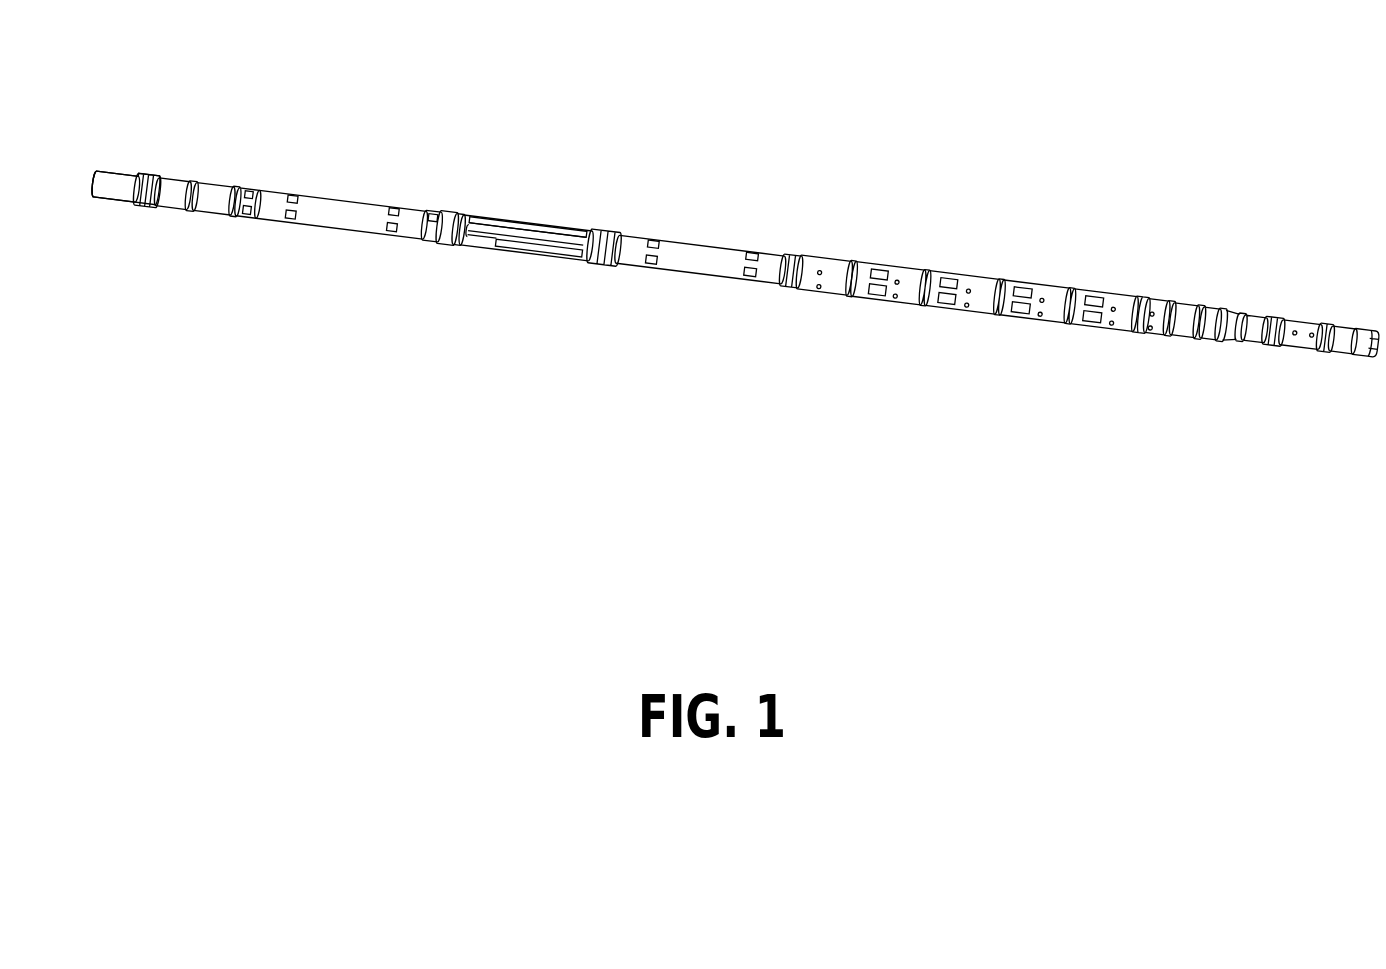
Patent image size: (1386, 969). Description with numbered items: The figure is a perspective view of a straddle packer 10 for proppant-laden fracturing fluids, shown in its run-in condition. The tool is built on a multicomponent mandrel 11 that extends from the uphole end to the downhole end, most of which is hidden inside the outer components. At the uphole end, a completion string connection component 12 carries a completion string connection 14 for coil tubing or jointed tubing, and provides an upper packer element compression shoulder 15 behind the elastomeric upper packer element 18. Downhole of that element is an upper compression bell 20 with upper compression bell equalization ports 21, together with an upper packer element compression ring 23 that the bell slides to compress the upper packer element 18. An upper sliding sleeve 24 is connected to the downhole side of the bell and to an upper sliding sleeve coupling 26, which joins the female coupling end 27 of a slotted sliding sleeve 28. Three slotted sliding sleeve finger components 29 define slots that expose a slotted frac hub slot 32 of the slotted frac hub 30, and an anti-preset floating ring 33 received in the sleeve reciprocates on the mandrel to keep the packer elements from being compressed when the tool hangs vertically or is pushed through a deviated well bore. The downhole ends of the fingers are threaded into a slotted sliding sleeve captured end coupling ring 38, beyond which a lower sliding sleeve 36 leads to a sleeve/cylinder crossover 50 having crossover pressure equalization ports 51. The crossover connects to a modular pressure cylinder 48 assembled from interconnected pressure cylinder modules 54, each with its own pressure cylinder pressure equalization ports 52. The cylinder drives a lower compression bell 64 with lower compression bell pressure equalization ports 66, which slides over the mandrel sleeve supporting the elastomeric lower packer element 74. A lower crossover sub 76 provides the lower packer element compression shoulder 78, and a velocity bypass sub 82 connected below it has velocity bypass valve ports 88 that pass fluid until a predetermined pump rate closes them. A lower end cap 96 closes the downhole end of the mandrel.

The straddle packer 10 is at (761, 109).
The multicomponent mandrel 11 is at (136, 153).
The completion string connection component 12 is at (110, 198).
The completion string connection 14 is at (93, 170).
The upper packer element compression shoulder 15 is at (158, 175).
The upper packer element 18 is at (182, 182).
The upper compression bell 20 is at (218, 193).
The upper compression bell equalization ports 21 is at (223, 205).
The upper packer element compression ring 23 is at (190, 203).
The upper sliding sleeve 24 is at (352, 205).
The upper sliding sleeve coupling 26 is at (435, 207).
The female coupling end 27 is at (445, 235).
The slotted sliding sleeve 28 is at (458, 248).
The slotted sliding sleeve finger components 29 is at (495, 233).
The slotted frac hub 30 is at (550, 225).
The slotted frac hub slot 32 is at (525, 223).
The anti-preset floating ring 33 is at (472, 223).
The lower sliding sleeve 36 is at (730, 250).
The slotted sliding sleeve captured end coupling ring 38 is at (602, 238).
The modular pressure cylinder 48 is at (1025, 264).
The sleeve/cylinder crossover 50 is at (820, 258).
The crossover pressure equalization ports 51 is at (820, 287).
The pressure cylinder pressure equalization ports 52 is at (897, 297).
The pressure cylinder modules 54 is at (913, 277).
The lower compression bell 64 is at (1147, 308).
The lower compression bell pressure equalization ports 66 is at (1153, 329).
The lower packer element 74 is at (1188, 315).
The lower crossover sub 76 is at (1223, 313).
The lower packer element compression shoulder 78 is at (1207, 333).
The velocity bypass sub 82 is at (1296, 307).
The velocity bypass valve ports 88 is at (1307, 328).
The lower end cap 96 is at (1363, 360).